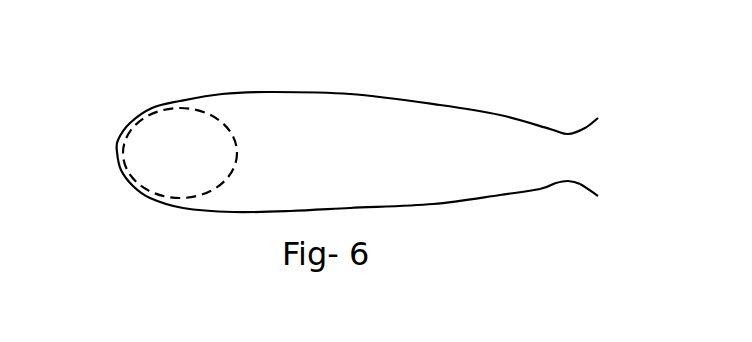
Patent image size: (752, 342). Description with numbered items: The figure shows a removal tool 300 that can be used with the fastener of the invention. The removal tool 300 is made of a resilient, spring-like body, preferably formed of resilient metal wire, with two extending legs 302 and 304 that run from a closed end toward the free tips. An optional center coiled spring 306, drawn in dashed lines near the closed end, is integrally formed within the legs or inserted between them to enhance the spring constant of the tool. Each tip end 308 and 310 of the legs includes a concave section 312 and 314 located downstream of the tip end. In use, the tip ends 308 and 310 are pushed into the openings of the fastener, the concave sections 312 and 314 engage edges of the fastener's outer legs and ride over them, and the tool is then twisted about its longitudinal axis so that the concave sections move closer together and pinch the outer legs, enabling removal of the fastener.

The removal tool 300 is at (222, 93).
The extending leg 302 is at (352, 97).
The extending leg 304 is at (432, 205).
The center coiled spring 306 is at (118, 177).
The tip end 308 is at (588, 115).
The tip end 310 is at (592, 195).
The concave section 312 is at (562, 128).
The concave section 314 is at (572, 183).